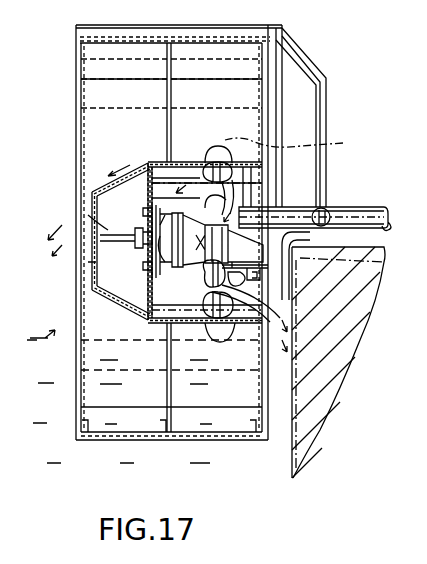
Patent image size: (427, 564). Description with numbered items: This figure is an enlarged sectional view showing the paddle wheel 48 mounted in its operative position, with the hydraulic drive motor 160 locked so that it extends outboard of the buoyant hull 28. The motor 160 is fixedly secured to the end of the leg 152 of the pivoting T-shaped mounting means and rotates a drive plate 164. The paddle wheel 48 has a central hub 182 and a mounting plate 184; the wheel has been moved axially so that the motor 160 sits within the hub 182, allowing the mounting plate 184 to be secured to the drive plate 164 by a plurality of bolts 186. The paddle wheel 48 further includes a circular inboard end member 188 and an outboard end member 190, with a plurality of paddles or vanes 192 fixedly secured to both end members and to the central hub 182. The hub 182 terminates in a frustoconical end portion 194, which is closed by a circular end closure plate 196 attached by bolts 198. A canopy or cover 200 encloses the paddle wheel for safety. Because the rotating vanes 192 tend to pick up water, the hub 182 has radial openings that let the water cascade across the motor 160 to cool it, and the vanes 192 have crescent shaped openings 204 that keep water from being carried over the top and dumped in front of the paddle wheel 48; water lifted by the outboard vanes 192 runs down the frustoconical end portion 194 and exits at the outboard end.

The paddle wheel 48 is at (78, 52).
The canopy or cover 200 is at (320, 67).
The outboard end member 190 is at (78, 142).
The paddles or vanes 192 is at (135, 103).
The hub 182 is at (180, 162).
The circular inboard end member 188 is at (262, 117).
The crescent shaped openings 204 is at (290, 177).
The leg 152 is at (358, 207).
The mounting plate 184 is at (78, 203).
The circular end closure plate 196 is at (88, 222).
The hydraulic drive motor 160 is at (138, 238).
The bolts 186 is at (90, 262).
The bolts 198 is at (92, 287).
The frustoconical end portion 194 is at (78, 338).
The drive plate 164 is at (168, 258).
The buoyant hull 28 is at (350, 338).